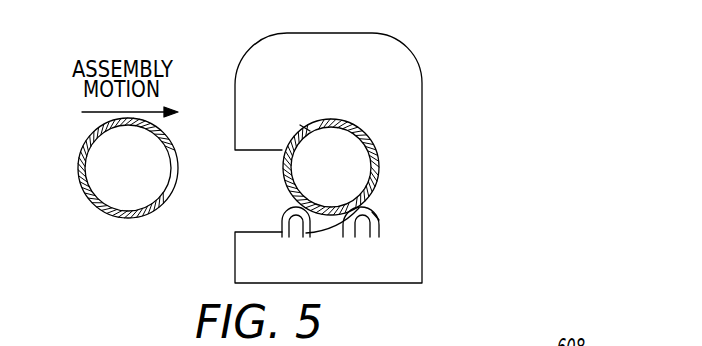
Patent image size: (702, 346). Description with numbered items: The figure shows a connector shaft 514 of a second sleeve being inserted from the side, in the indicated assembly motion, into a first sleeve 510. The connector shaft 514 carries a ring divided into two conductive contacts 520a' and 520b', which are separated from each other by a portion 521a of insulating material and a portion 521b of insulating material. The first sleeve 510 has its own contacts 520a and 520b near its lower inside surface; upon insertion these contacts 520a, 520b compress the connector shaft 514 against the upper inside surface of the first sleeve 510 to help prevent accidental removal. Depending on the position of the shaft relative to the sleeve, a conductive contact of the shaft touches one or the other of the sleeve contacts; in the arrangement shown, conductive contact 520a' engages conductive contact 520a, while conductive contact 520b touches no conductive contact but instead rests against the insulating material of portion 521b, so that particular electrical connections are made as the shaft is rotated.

The first sleeve 510 is at (520, 42).
The connector shaft 514 is at (143, 177).
The conductive contact 520a is at (285, 246).
The conductive contact 520b is at (342, 246).
The conductive contact 520a' is at (289, 170).
The conductive contact 520b' is at (370, 134).
The portion of insulating material 521a is at (305, 128).
The portion of insulating material 521b is at (372, 212).